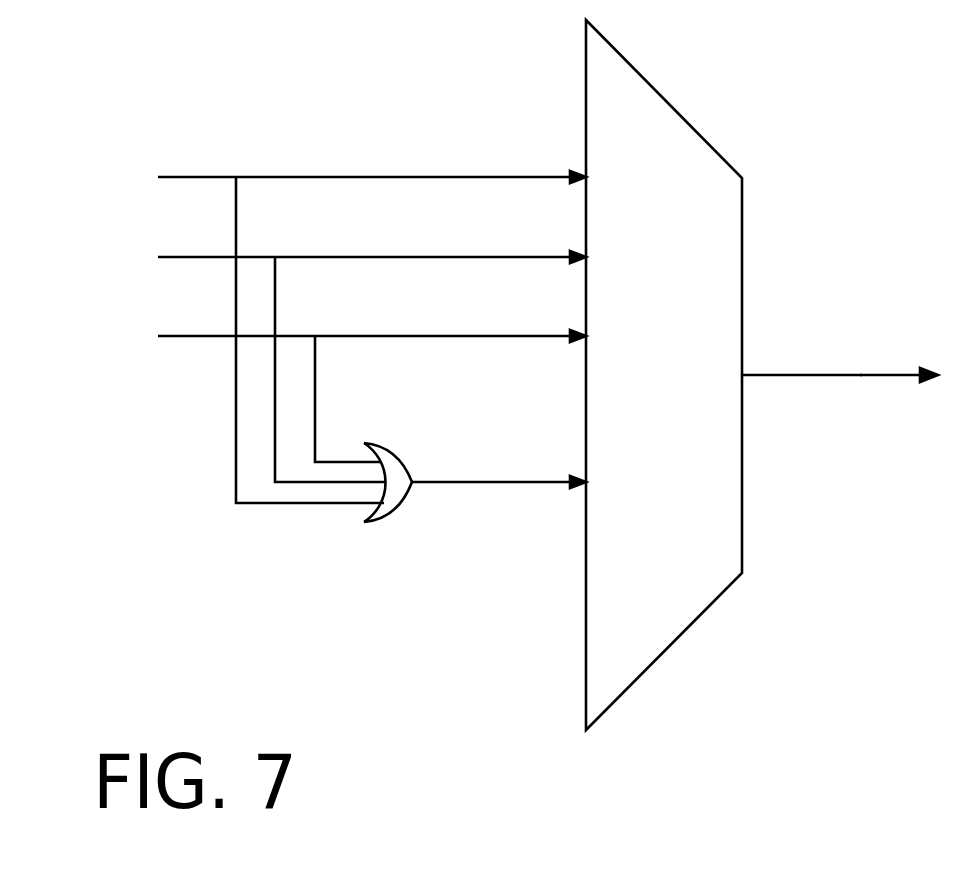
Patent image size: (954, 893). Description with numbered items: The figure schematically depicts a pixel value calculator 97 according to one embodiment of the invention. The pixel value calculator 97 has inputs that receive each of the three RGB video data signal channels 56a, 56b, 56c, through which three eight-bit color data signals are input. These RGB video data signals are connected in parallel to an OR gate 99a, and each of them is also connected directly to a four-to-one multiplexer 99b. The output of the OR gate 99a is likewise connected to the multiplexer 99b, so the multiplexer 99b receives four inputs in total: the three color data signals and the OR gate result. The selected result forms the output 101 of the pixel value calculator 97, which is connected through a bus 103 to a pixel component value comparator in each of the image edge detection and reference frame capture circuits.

The RGB video data signal channel 56a is at (198, 177).
The RGB video data signal channel 56b is at (198, 257).
The RGB video data signal channel 56c is at (198, 336).
The pixel value calculator 97 is at (395, 525).
The OR gate 99a is at (398, 452).
The 4:1 multiplexer 99b is at (664, 375).
The output 101 is at (747, 373).
The bus 103 is at (862, 372).